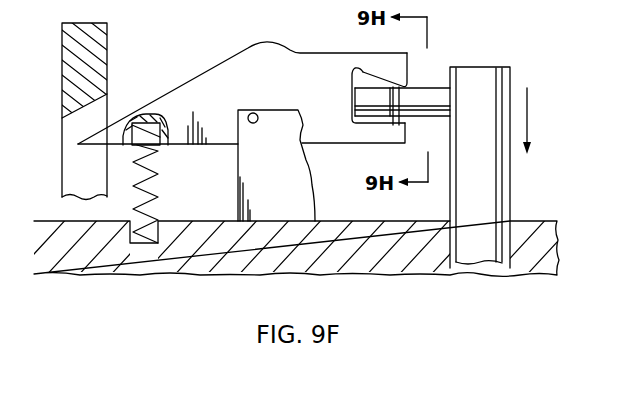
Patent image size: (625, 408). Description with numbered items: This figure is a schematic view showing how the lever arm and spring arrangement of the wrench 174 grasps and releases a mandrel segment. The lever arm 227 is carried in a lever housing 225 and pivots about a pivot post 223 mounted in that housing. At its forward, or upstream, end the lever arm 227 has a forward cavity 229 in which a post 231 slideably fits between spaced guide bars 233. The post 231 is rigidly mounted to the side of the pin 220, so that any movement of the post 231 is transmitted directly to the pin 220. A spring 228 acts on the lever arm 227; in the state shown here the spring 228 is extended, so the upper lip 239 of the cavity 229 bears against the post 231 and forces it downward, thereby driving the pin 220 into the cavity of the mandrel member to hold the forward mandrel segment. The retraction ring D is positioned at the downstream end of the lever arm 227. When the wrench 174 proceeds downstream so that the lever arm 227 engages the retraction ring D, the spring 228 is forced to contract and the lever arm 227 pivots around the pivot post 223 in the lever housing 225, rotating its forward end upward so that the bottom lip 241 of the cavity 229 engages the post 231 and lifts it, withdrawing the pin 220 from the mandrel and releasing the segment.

The wrench 174 is at (187, 260).
The retraction ring D is at (73, 52).
The lever arm 227 is at (258, 67).
The spring 228 is at (158, 184).
The lever housing 225 is at (303, 198).
The pivot post 223 is at (257, 122).
The bottom lip 241 is at (397, 135).
The forward cavity 229 is at (359, 71).
The upper lip 239 is at (395, 67).
The guide bars 233 is at (400, 126).
The post 231 is at (427, 97).
The pin 220 is at (488, 78).